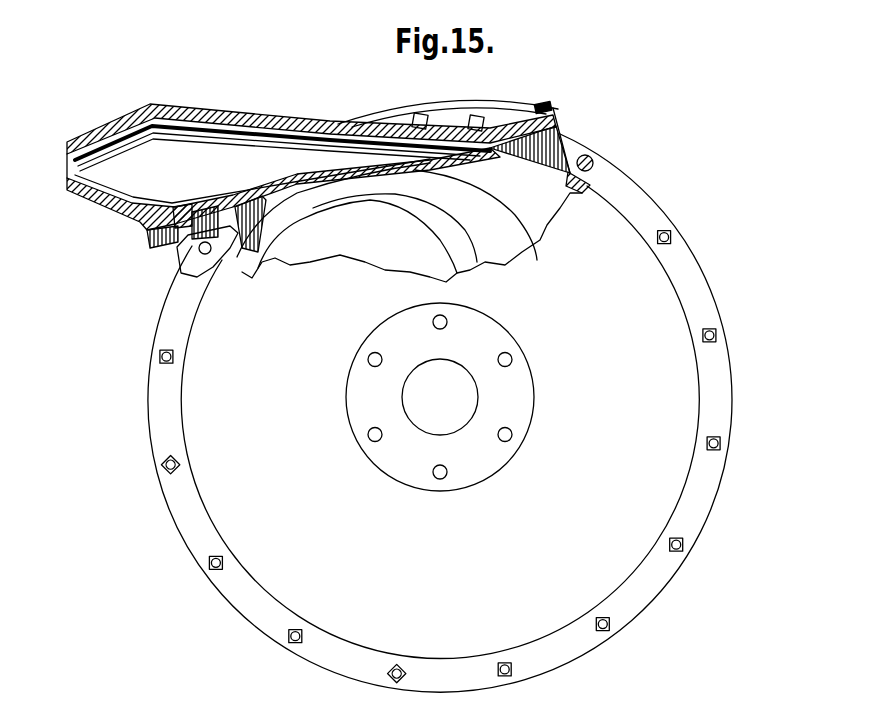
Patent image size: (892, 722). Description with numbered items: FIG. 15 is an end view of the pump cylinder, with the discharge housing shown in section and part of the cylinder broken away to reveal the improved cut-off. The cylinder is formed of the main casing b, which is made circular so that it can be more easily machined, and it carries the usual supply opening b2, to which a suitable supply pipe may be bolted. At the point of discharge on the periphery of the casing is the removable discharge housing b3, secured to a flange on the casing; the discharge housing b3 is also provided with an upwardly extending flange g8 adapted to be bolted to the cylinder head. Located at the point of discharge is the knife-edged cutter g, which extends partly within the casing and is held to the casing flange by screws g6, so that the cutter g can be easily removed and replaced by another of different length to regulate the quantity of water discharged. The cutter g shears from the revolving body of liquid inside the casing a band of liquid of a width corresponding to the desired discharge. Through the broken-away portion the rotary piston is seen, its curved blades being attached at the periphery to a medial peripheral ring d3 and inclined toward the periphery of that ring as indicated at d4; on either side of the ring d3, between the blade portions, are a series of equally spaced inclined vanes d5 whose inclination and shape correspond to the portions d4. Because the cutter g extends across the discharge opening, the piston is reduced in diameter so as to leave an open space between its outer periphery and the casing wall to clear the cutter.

The main casing b is at (440, 413).
The supply opening b2 is at (440, 397).
The discharge housing b3 is at (175, 107).
The knife-edged cutter g is at (305, 183).
The screws g6 is at (180, 247).
The upwardly extending flange g8 is at (443, 120).
The medial peripheral ring d3 is at (523, 207).
The inclined blade portions d4 is at (400, 208).
The inclined vanes d5 is at (280, 258).